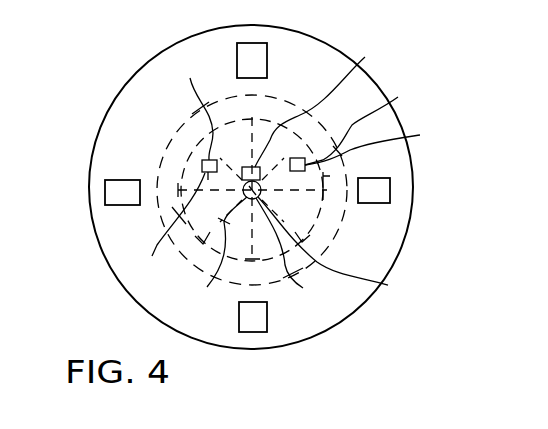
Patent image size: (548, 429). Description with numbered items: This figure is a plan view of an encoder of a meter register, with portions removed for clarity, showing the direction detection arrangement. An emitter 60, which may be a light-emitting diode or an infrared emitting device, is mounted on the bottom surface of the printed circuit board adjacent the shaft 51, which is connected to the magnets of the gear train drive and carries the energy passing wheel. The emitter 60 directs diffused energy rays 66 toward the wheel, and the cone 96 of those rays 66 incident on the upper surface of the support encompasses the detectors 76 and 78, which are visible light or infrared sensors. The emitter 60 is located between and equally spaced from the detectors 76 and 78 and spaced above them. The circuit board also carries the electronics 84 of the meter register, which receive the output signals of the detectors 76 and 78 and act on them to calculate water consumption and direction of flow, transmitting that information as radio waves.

The shaft 51 is at (297, 253).
The emitter 60 is at (297, 98).
The diffused energy rays 66 is at (296, 182).
The detector 76 is at (169, 233).
The detector 78 is at (367, 123).
The electronics 84 is at (267, 60).
The cone 96 is at (377, 143).